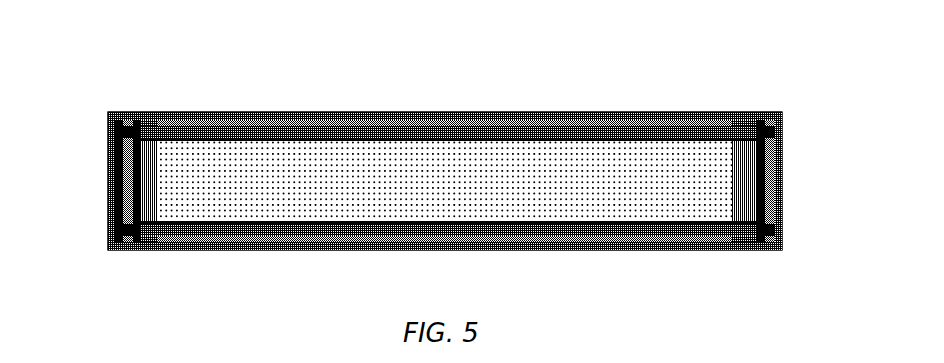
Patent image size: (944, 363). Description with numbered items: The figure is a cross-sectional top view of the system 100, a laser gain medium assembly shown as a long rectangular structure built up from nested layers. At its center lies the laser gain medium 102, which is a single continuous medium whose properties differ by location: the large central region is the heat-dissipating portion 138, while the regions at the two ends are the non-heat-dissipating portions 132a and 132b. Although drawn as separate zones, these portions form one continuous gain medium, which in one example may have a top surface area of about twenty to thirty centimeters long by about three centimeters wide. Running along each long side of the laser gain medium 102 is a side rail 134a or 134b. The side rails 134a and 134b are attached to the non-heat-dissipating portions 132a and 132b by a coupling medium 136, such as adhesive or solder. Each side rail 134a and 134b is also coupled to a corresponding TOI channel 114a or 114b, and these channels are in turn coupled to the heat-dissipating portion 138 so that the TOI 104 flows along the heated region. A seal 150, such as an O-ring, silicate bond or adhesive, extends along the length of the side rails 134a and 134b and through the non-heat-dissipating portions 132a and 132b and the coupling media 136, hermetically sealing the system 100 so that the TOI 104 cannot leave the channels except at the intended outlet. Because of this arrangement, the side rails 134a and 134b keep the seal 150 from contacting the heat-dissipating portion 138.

The system 100 is at (97, 89).
The laser gain medium 102 is at (784, 162).
The TOI 104 is at (528, 141).
The TOI channel 114a is at (427, 141).
The TOI channel 114b is at (303, 221).
The non-heat-dissipating portion 132a is at (108, 176).
The non-heat-dissipating portion 132b is at (783, 182).
The side rail 134a is at (498, 112).
The side rail 134b is at (121, 250).
The coupling medium 136 is at (108, 228).
The heat-dissipating portion 138 is at (704, 208).
The seal 150 is at (345, 124).